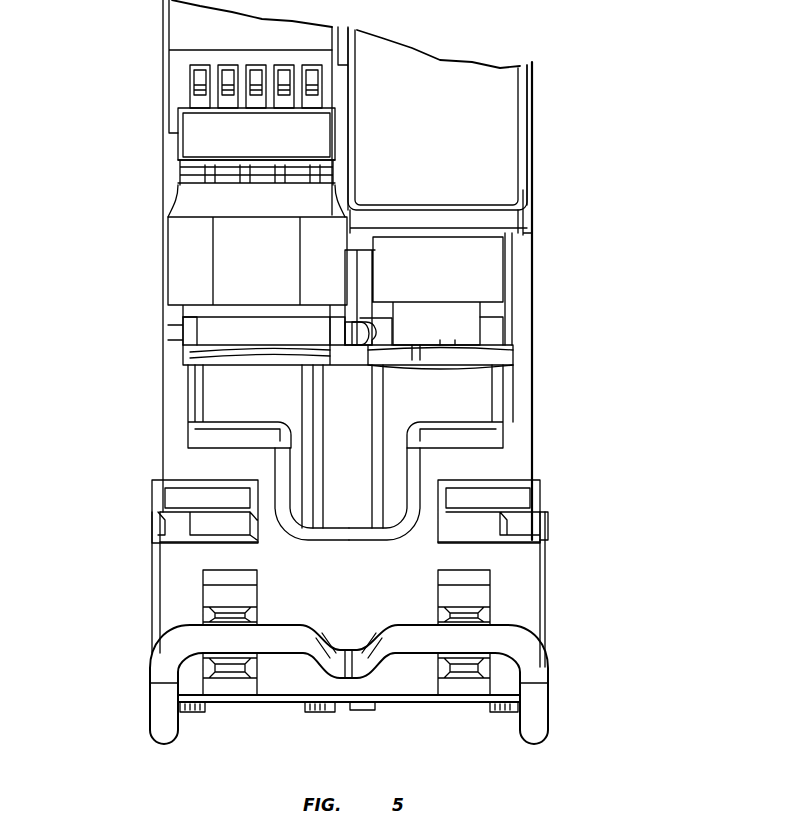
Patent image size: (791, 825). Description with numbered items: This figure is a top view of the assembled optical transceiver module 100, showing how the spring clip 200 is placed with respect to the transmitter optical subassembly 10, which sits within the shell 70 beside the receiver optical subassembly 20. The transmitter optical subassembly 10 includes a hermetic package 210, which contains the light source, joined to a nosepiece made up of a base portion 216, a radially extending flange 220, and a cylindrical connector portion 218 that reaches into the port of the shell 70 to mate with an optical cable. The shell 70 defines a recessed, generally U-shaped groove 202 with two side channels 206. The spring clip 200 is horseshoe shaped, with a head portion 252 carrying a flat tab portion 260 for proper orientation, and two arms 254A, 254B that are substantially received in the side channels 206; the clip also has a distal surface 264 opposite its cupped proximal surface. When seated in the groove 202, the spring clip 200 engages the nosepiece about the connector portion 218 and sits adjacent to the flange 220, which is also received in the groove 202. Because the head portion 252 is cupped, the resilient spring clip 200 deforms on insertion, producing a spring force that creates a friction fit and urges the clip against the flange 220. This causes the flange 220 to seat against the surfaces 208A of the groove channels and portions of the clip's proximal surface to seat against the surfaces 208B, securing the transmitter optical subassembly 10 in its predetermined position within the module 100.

The optical transceiver module 100 is at (110, 145).
The transmitter optical subassembly 10 is at (530, 150).
The receiver optical subassembly 20 is at (163, 268).
The hermetic package 210 is at (437, 130).
The base portion 216 is at (424, 291).
The flange 220 is at (450, 345).
The groove 202 is at (522, 348).
The side channels 206 is at (290, 318).
The surfaces of the groove bottom and side channels 208A is at (330, 318).
The surfaces of the groove bottom and side channels 208B is at (375, 392).
The tab portion 260 is at (355, 352).
The distal surface 264 is at (412, 360).
The first arm 254A is at (395, 418).
The second arm 254B is at (513, 395).
The head portion 252 is at (418, 445).
The shell 70 is at (533, 465).
The spring clip 200 is at (525, 425).
The connector portion 218 is at (440, 415).